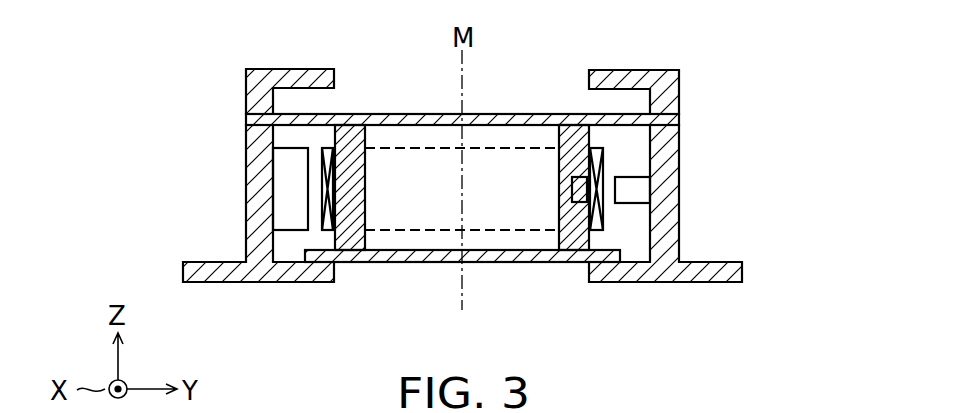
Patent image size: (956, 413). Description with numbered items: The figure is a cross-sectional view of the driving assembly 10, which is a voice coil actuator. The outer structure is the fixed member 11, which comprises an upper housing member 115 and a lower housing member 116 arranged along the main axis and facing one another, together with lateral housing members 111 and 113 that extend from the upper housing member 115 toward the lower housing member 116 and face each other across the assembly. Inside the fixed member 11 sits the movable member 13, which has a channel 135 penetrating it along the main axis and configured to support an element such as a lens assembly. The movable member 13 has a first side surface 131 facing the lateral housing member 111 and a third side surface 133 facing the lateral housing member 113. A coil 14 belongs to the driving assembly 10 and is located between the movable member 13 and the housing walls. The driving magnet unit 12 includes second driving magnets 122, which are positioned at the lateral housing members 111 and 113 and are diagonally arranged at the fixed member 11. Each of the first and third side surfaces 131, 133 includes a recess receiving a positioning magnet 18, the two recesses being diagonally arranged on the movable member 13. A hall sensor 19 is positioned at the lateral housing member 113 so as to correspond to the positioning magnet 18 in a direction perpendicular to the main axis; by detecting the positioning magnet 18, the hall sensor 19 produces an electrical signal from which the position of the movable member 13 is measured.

The driving assembly 10 is at (138, 72).
The fixed member 11 is at (237, 66).
The upper housing member 115 is at (300, 80).
The lateral housing member 111 is at (258, 207).
The lower housing member 116 is at (193, 272).
The lateral housing member 113 is at (667, 210).
The driving magnet unit 12 is at (636, 142).
The movable member 13 is at (417, 260).
The coil 14 is at (312, 163).
The first side surface 131 is at (320, 238).
The third side surface 133 is at (590, 238).
The channel 135 is at (433, 138).
The second driving magnet 122 is at (283, 175).
The hall sensor 19 is at (640, 190).
The positioning magnet 18 is at (582, 200).